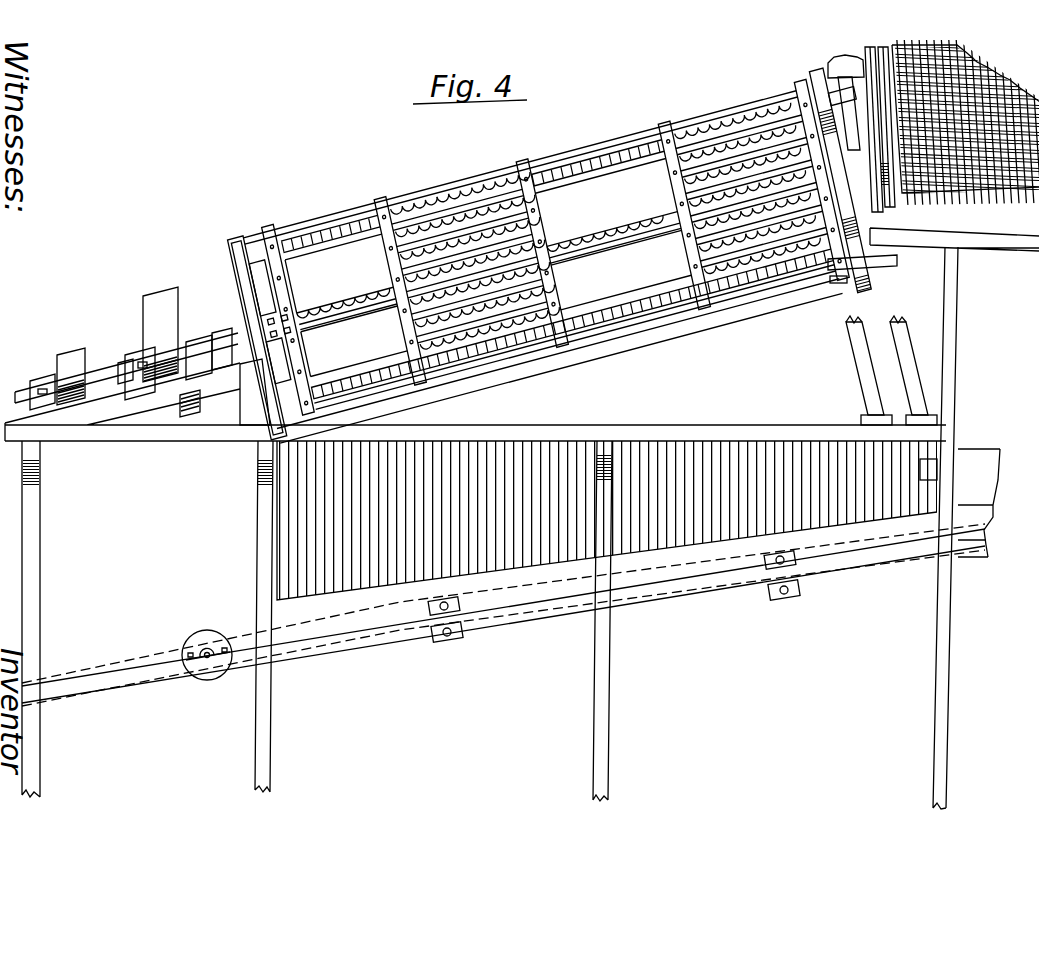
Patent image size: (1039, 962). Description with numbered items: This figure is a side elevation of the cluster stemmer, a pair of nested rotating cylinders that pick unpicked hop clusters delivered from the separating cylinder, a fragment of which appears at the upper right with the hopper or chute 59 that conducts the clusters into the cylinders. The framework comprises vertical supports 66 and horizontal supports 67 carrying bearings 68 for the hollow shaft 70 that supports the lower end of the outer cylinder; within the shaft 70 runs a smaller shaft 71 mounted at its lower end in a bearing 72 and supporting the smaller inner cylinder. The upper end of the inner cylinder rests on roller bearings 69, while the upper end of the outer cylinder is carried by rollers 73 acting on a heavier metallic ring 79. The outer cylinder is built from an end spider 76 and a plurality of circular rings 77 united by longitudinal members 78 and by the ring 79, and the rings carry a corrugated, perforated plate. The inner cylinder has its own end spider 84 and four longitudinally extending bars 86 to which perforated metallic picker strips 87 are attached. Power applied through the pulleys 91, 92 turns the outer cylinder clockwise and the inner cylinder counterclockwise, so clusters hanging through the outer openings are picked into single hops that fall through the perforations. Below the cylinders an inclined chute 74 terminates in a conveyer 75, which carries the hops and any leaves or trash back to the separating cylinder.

The hopper or chute 59 is at (855, 129).
The vertical supports 66 is at (959, 376).
The horizontal supports 67 is at (608, 470).
The bearings 68 is at (133, 353).
The roller bearings 69 is at (894, 288).
The shaft 70 is at (188, 346).
The smaller shaft 71 is at (101, 373).
The bearing 72 is at (40, 380).
The rollers 73 is at (776, 97).
The inclined chute 74 is at (463, 456).
The conveyer 75 is at (233, 632).
The end spider 76 is at (228, 262).
The circular rings 77 is at (283, 234).
The longitudinal members 78 is at (338, 222).
The heavier metallic ring 79 is at (798, 86).
The end spider 84 is at (254, 292).
The longitudinally extending bars 86 is at (574, 222).
The metallic strips 87 is at (496, 303).
The pulley 91 is at (152, 300).
The pulley 92 is at (68, 356).